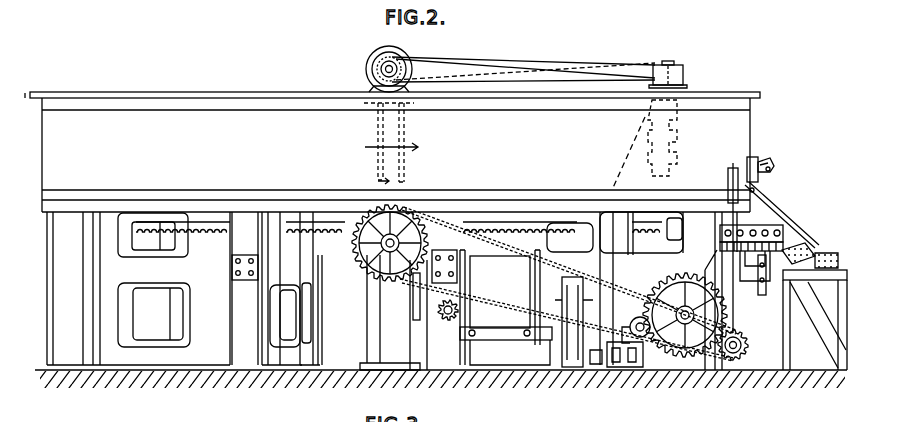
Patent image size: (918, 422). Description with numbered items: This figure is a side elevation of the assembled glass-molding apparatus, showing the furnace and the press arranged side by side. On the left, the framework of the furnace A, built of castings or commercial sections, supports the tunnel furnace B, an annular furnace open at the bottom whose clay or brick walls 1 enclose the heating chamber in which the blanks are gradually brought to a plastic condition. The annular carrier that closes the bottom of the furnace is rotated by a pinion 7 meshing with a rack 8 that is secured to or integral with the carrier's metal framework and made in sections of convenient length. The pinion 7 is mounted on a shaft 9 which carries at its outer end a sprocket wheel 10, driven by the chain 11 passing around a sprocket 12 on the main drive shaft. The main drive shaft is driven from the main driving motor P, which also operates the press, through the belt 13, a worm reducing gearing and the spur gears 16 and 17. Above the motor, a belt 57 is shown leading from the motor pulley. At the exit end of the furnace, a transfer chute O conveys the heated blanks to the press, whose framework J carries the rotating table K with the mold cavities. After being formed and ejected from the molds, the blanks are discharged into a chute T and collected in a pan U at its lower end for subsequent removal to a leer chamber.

The clay or brick walls 1 is at (376, 67).
The belt 57 is at (505, 64).
The tunnel furnace B is at (392, 152).
The framework of the furnace A is at (213, 340).
The rack 8 is at (330, 228).
The sprocket wheel 10 is at (384, 214).
The shaft 9 is at (393, 223).
The pinion 7 is at (378, 272).
The chain 11 is at (508, 242).
The main driving motor P is at (505, 288).
The belt 13 is at (573, 352).
The spur gear 16 is at (680, 357).
The spur gear 17 is at (742, 320).
The sprocket 12 is at (748, 352).
The transfer chute O is at (720, 208).
The rotating table K is at (787, 222).
The chute T is at (800, 241).
The pan U is at (828, 257).
The framework of the press J is at (760, 330).